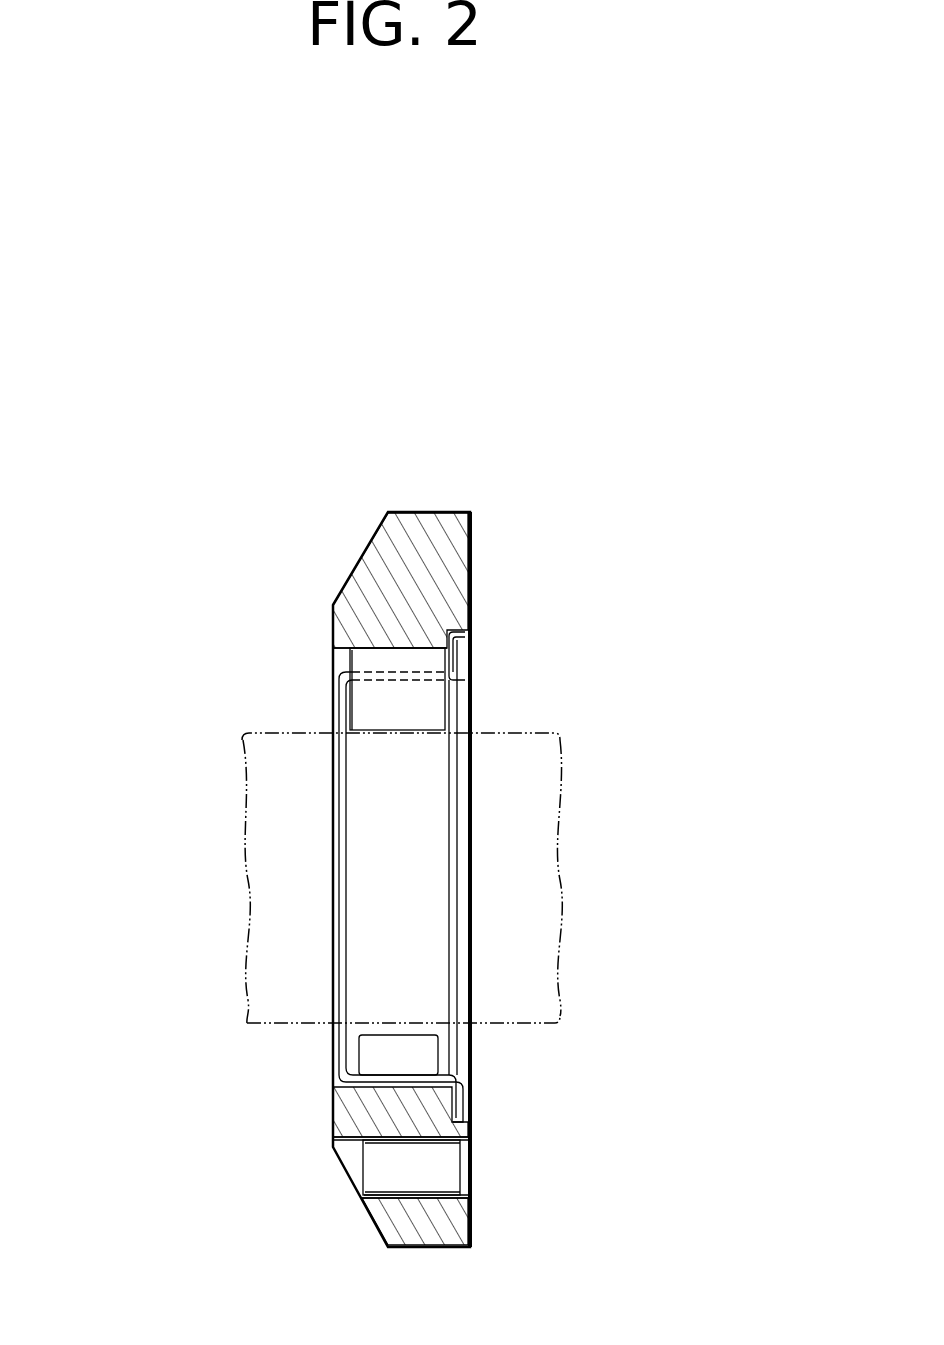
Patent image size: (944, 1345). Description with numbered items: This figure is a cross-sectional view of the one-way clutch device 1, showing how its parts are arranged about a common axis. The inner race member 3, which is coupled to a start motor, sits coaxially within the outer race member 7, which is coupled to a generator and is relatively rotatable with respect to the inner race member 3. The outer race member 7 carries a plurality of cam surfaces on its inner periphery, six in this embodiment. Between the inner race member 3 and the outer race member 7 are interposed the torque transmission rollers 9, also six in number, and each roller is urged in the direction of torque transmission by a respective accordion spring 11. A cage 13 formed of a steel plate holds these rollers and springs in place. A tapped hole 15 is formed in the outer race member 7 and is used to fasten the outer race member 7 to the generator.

The one-way clutch device 1 is at (163, 557).
The inner race member 3 is at (532, 725).
The outer race member 7 is at (475, 530).
The torque transmission roller 9 is at (368, 702).
The accordion spring 11 is at (418, 1055).
The cage 13 is at (333, 1063).
The tapped hole 15 is at (407, 1192).